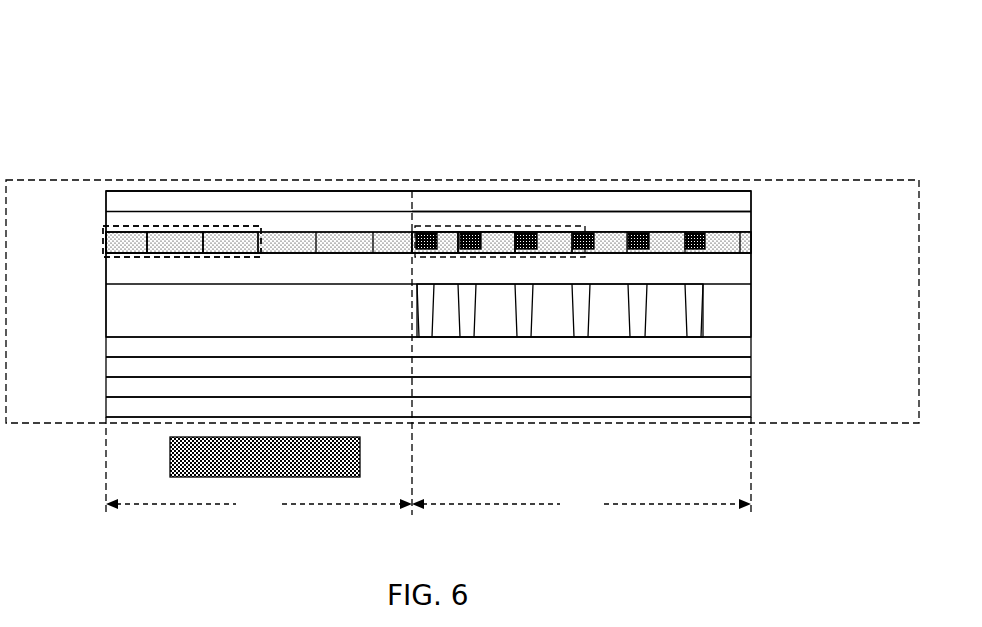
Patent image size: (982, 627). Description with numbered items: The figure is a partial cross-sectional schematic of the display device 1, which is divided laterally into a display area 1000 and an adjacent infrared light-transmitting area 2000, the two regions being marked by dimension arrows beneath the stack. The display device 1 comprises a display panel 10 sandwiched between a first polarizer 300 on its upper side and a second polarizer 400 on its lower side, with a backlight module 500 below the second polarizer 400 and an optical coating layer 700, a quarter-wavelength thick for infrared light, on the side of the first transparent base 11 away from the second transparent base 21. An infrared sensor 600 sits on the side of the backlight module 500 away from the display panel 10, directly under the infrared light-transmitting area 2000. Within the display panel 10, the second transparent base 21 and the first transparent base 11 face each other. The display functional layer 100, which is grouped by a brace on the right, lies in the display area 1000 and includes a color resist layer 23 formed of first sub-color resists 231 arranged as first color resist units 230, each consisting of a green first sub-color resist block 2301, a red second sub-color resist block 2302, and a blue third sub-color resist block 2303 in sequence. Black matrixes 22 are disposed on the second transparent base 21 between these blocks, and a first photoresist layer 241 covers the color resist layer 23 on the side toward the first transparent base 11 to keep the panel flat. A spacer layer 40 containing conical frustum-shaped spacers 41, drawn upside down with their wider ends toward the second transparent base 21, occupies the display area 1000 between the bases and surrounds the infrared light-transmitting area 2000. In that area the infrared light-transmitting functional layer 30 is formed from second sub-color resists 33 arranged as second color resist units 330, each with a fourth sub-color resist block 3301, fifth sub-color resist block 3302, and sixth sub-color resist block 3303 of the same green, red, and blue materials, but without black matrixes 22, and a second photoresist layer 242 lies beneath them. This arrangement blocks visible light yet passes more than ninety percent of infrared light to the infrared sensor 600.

The display device 1 is at (75, 128).
The display panel 10 is at (803, 426).
The display functional layer 100 is at (877, 213).
The first transparent base 11 is at (752, 345).
The second transparent base 21 is at (752, 218).
The black matrix 22 is at (694, 240).
The color resist layer 23 is at (581, 242).
The first sub-color resist 231 is at (752, 238).
The first color resist unit 230 is at (585, 228).
The first sub-color resist block 2301 is at (444, 234).
The second sub-color resist block 2302 is at (498, 234).
The third sub-color resist block 2303 is at (557, 234).
The first photoresist layer 241 is at (752, 262).
The second photoresist layer 242 is at (106, 277).
The infrared light-transmitting functional layer 30 is at (259, 242).
The second sub-color resist 33 is at (103, 238).
The second color resist unit 330 is at (262, 228).
The fourth sub-color resist block 3301 is at (126, 234).
The fifth sub-color resist block 3302 is at (179, 234).
The sixth sub-color resist block 3303 is at (237, 234).
The spacer layer 40 is at (560, 310).
The spacer 41 is at (703, 303).
The first polarizer 300 is at (106, 200).
The second polarizer 400 is at (106, 361).
The backlight module 500 is at (106, 385).
The infrared sensor 600 is at (170, 455).
The optical coating layer 700 is at (752, 405).
The display area 1000 is at (581, 466).
The infrared light-transmitting area 2000 is at (259, 466).